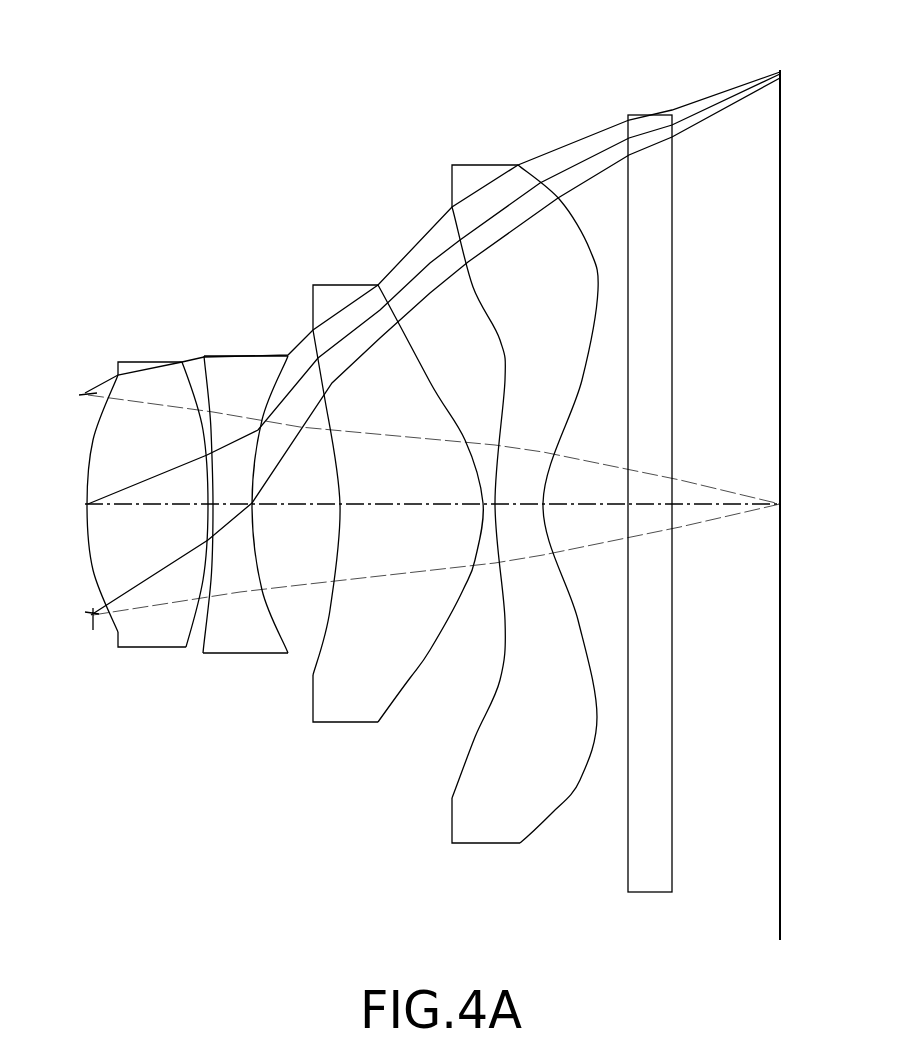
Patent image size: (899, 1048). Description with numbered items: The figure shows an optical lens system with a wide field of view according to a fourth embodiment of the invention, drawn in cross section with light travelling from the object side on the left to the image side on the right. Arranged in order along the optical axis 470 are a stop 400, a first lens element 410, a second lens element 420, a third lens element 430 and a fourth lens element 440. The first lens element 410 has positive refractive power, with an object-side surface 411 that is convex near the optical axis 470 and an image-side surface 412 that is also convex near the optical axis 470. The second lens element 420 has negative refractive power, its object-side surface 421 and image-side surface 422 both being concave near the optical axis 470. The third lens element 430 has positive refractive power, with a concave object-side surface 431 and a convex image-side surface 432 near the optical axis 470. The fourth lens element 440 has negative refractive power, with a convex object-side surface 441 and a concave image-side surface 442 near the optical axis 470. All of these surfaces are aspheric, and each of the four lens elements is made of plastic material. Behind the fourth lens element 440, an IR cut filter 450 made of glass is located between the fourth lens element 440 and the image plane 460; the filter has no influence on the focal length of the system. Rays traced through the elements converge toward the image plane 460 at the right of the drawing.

The stop 400 is at (95, 391).
The first lens element 410 is at (130, 492).
The object-side surface of the first lens element 411 is at (95, 570).
The image-side surface of the first lens element 412 is at (190, 622).
The second lens element 420 is at (232, 490).
The object-side surface of the second lens element 421 is at (208, 618).
The image-side surface of the second lens element 422 is at (268, 612).
The third lens element 430 is at (375, 487).
The object-side surface of the third lens element 431 is at (327, 623).
The image-side surface of the third lens element 432 is at (410, 676).
The fourth lens element 440 is at (486, 491).
The object-side surface of the fourth lens element 441 is at (473, 737).
The image-side surface of the fourth lens element 442 is at (555, 812).
The IR cut filter 450 is at (650, 114).
The image plane 460 is at (779, 868).
The optical axis 470 is at (745, 502).